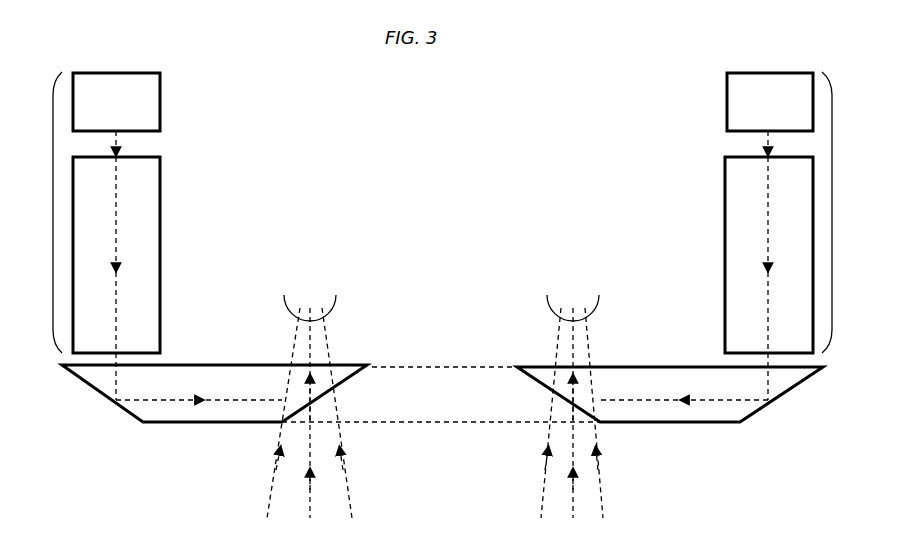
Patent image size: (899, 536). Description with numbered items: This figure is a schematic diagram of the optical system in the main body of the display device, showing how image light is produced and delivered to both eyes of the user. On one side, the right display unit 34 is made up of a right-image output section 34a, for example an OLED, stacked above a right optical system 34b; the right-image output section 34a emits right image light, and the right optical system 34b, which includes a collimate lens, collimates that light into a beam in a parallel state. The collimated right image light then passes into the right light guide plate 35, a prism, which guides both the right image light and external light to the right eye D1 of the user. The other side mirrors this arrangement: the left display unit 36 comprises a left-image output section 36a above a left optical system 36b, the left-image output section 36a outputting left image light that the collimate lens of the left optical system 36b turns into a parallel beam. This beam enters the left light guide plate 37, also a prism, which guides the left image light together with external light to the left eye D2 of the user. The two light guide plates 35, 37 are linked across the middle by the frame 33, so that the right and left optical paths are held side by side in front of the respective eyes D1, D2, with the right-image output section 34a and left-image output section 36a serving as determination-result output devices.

The frame 33 is at (420, 424).
The right display unit 34 is at (117, 236).
The right-image output section 34a is at (160, 98).
The right optical system 34b is at (160, 207).
The right light guide plate 35 is at (185, 424).
The left display unit 36 is at (766, 236).
The left-image output section 36a is at (727, 100).
The left optical system 36b is at (725, 208).
The left light guide plate 37 is at (712, 424).
The right eye D1 is at (330, 308).
The left eye D2 is at (553, 308).